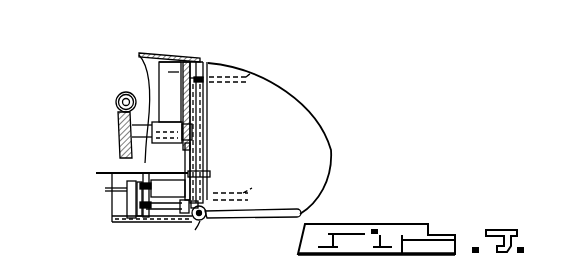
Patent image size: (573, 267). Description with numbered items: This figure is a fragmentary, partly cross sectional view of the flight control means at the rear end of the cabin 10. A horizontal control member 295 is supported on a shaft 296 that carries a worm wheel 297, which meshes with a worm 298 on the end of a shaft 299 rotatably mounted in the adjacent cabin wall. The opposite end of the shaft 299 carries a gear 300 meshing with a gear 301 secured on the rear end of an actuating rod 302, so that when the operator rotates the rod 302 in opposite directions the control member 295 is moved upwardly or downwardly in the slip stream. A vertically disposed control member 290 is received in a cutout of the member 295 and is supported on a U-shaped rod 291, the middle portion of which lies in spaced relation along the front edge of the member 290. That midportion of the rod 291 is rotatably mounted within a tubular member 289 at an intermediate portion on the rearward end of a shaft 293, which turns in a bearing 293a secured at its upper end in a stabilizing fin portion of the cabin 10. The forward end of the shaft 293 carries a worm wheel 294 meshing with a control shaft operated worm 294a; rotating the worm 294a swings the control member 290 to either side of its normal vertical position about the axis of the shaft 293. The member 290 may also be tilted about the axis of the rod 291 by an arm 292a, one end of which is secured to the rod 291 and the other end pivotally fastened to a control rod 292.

The cabin 10 is at (154, 53).
The tubular member 289 is at (208, 118).
The vertically disposed control member 290 is at (313, 153).
The U-shaped rod 291 is at (165, 194).
The control rod 292 is at (98, 173).
The arm 292a is at (211, 177).
The shaft 293 is at (142, 96).
The bearing 293a is at (198, 61).
The worm wheel 294 is at (117, 128).
The control shaft operated worm 294a is at (117, 95).
The horizontal control member 295 is at (258, 219).
The shaft 296 is at (203, 223).
The worm wheel 297 is at (195, 230).
The worm 298 is at (208, 198).
The shaft 299 is at (165, 223).
The gear 300 is at (139, 222).
The gear 301 is at (146, 175).
The actuating rod 302 is at (110, 194).